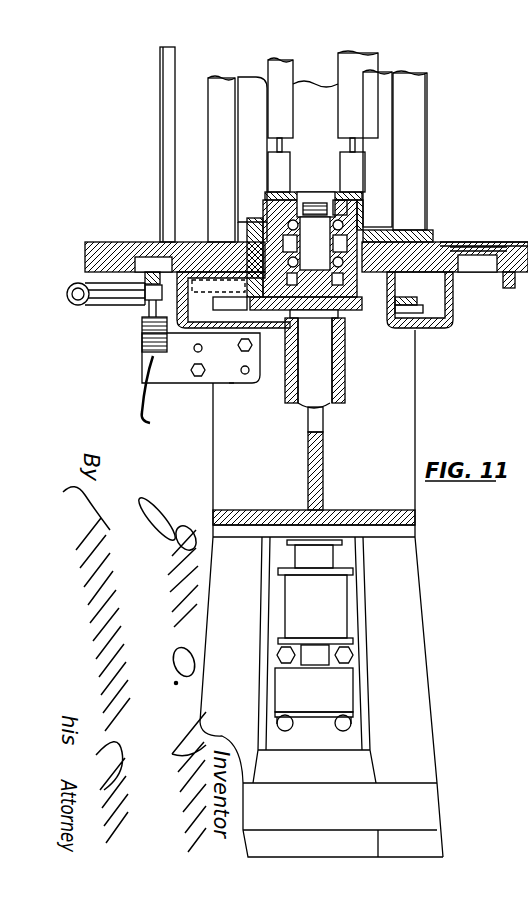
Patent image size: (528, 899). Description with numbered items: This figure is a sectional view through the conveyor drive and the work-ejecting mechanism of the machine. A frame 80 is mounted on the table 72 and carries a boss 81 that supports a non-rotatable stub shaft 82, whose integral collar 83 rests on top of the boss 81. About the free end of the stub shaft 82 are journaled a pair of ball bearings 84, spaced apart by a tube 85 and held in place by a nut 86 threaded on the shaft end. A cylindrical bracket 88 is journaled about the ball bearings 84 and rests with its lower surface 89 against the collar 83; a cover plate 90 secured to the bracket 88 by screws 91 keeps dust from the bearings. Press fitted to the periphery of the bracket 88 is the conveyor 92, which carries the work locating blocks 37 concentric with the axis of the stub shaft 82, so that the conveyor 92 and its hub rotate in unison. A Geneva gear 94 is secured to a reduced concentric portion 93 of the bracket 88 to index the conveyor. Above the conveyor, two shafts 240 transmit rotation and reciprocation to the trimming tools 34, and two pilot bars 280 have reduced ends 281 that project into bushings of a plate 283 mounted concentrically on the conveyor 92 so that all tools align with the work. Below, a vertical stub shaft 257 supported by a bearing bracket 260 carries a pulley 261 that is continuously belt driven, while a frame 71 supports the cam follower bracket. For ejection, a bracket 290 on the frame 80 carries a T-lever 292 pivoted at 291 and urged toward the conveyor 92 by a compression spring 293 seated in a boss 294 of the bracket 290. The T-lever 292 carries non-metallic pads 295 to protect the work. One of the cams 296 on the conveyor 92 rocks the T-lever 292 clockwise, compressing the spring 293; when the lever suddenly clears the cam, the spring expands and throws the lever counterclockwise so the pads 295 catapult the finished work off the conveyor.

The trimming tools 34 is at (348, 165).
The work locating blocks 37 is at (152, 242).
The frame 71 is at (415, 135).
The table 72 is at (415, 663).
The frame 80 is at (392, 447).
The boss 81 is at (347, 381).
The stub shaft 82 is at (287, 387).
The collar 83 is at (347, 346).
The ball bearings 84 is at (387, 204).
The tube 85 is at (390, 283).
The nut 86 is at (305, 194).
The cylindrical bracket 88 is at (233, 233).
The lower surface 89 is at (278, 330).
The cover plate 90 is at (327, 188).
The screws 91 is at (260, 204).
The conveyor 92 is at (484, 230).
The reduced concentric portion 93 is at (231, 385).
The Geneva gear 94 is at (428, 330).
The shafts 240 is at (345, 67).
The vertical stub shaft 257 is at (333, 554).
The bearing bracket 260 is at (340, 687).
The pulley 261 is at (335, 586).
The pilot bars 280 is at (375, 120).
The reduced ends 281 is at (393, 226).
The plate 283 is at (198, 238).
The bracket 290 is at (178, 385).
The pivot 291 is at (78, 307).
The T-lever 292 is at (117, 295).
The compression spring 293 is at (145, 356).
The boss 294 is at (163, 400).
The non-metallic pads 295 is at (90, 281).
The cams 296 is at (507, 289).